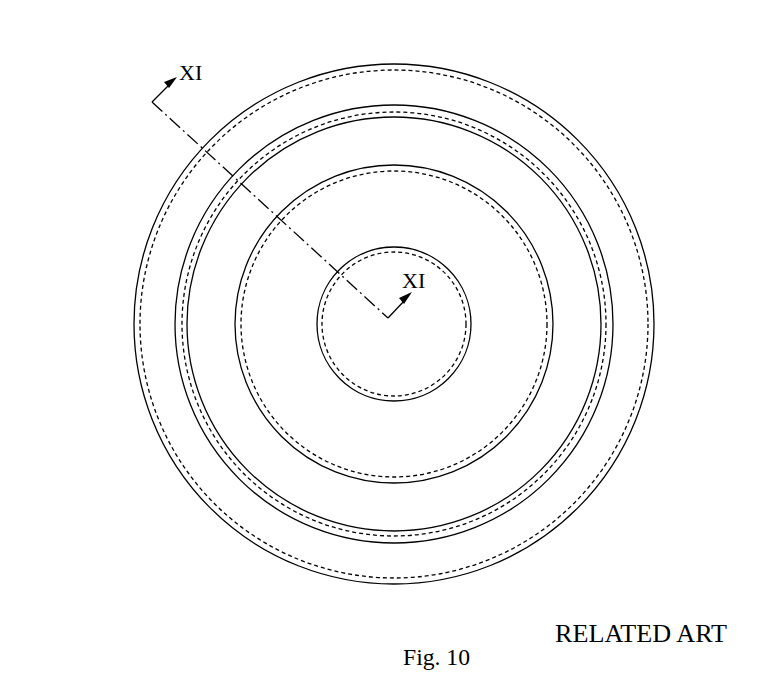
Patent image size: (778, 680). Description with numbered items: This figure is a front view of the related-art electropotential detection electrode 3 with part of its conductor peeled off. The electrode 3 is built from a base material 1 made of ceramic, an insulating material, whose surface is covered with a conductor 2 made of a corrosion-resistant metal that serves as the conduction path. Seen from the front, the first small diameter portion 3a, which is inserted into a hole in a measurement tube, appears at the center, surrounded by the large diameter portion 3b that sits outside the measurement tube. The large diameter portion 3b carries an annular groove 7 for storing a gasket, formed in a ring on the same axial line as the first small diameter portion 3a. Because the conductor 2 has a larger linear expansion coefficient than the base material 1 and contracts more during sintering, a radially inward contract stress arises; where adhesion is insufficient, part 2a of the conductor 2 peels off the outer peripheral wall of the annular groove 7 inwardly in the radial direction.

The base material 1 is at (181, 212).
The conductor 2 is at (155, 268).
The part of the conductor 2a is at (272, 143).
The electropotential detection electrode 3 is at (160, 157).
The first small diameter portion 3a is at (317, 323).
The large diameter portion 3b is at (158, 440).
The annular groove 7 is at (360, 148).